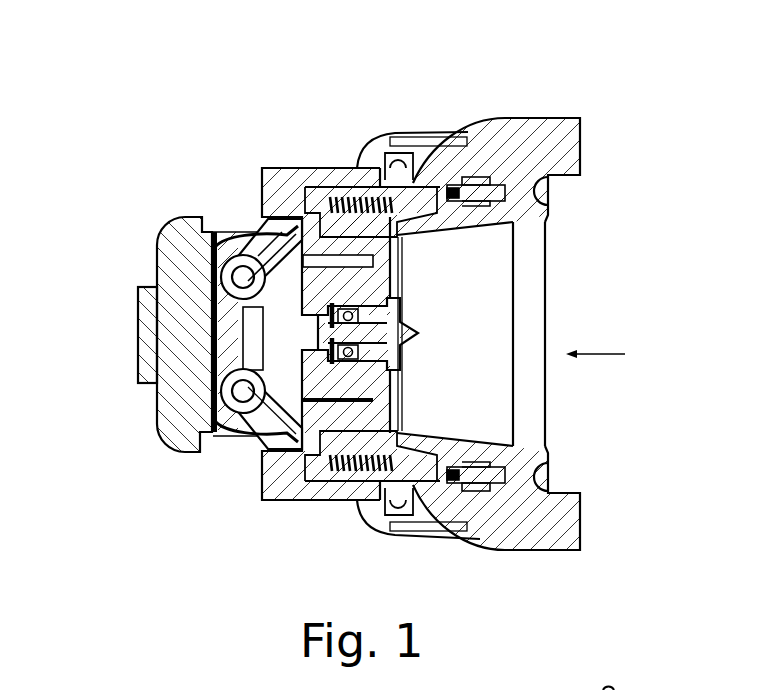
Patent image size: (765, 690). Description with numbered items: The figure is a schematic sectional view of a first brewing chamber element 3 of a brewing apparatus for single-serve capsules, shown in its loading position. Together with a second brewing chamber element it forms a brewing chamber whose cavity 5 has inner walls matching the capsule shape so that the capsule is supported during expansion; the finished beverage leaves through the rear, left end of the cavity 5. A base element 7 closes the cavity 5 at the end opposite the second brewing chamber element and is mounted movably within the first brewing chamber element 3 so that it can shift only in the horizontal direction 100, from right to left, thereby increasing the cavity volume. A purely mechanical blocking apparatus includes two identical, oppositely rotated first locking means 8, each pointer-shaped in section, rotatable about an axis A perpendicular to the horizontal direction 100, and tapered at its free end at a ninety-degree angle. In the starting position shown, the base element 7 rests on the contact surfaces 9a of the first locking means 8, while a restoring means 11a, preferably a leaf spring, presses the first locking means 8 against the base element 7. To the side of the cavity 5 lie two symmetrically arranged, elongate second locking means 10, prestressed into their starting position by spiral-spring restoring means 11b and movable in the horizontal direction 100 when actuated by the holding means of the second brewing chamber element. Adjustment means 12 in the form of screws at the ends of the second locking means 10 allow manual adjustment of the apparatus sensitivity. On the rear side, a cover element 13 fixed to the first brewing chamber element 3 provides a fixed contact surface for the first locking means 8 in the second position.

The first brewing chamber element 3 is at (556, 84).
The cavity 5 is at (537, 327).
The base element 7 is at (333, 402).
The first locking means 8 is at (227, 232).
The contact surfaces 9a is at (263, 250).
The second locking means 10 is at (400, 470).
The restoring means 11a is at (214, 243).
The restoring means 11b is at (340, 197).
The adjustment means 12 is at (472, 480).
The cover element 13 is at (165, 418).
The horizontal direction 100 is at (597, 371).
The axis A is at (241, 399).